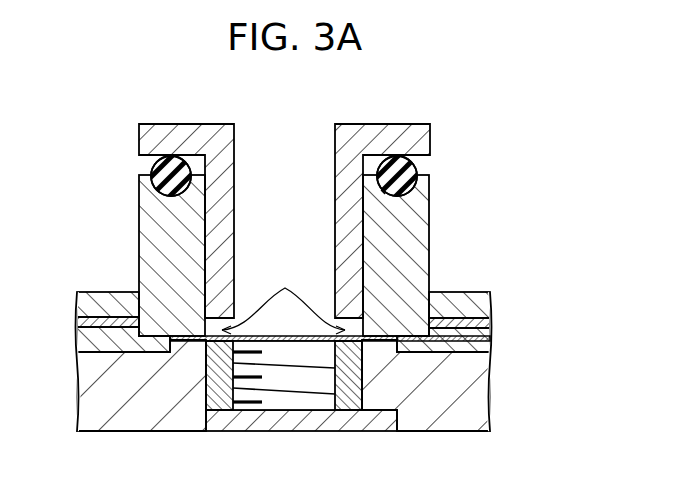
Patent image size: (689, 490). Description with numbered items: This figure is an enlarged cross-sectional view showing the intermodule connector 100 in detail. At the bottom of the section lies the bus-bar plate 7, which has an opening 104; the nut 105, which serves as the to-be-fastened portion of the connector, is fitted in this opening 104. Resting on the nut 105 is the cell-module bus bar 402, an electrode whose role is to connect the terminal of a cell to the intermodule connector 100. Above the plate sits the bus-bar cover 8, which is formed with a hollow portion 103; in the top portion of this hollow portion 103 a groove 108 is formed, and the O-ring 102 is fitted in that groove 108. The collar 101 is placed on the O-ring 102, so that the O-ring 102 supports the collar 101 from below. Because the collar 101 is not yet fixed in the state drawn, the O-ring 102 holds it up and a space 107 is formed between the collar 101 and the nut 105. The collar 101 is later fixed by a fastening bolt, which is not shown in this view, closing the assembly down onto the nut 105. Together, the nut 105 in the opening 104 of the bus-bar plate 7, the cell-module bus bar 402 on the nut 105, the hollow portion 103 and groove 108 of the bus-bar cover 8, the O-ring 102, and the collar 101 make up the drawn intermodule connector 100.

The intermodule connector 100 is at (388, 105).
The collar 101 is at (429, 143).
The O-ring 102 is at (418, 170).
The groove 108 is at (407, 188).
The hollow portion 103 is at (403, 253).
The space 107 is at (283, 299).
The bus-bar cover 8 is at (488, 305).
The cell-module bus bar 402 is at (490, 332).
The opening 104 is at (362, 400).
The nut 105 is at (340, 405).
The bus-bar plate 7 is at (113, 427).